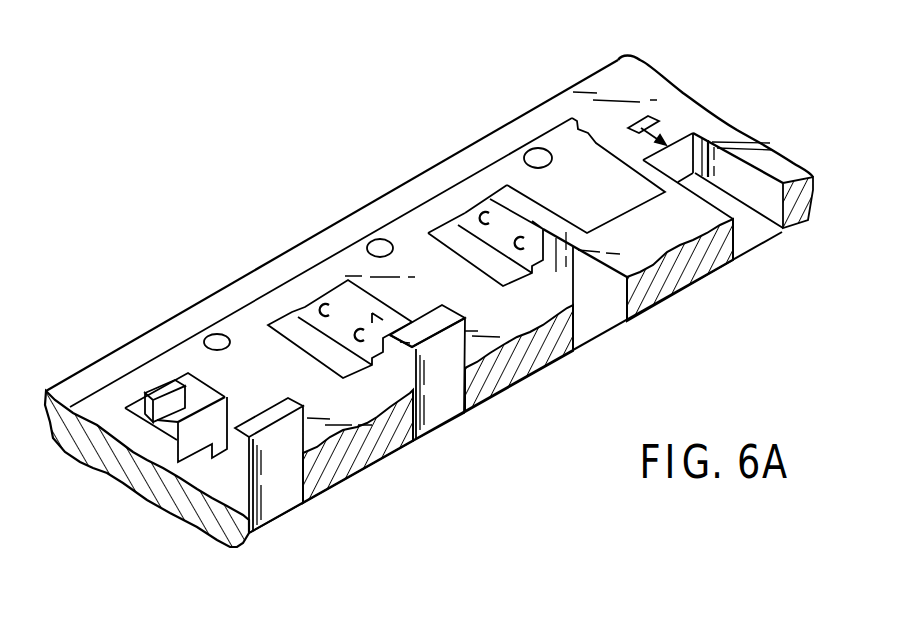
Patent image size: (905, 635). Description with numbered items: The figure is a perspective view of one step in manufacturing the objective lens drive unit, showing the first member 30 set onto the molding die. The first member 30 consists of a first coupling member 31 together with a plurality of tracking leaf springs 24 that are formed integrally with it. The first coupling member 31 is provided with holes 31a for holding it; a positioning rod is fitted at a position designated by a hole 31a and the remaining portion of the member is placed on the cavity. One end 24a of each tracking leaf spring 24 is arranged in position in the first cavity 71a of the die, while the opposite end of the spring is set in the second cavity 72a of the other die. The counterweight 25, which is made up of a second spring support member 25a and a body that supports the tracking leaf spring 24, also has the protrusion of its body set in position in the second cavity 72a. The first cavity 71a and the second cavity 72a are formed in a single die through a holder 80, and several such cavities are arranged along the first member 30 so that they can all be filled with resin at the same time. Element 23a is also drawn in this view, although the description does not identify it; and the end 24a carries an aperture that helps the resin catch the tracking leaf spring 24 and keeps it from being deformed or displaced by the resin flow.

The projection 23a is at (165, 386).
The tracking leaf spring 24 is at (506, 228).
The end of tracking leaf spring 24a is at (318, 309).
The counterweight 25 is at (427, 435).
The second spring support member 25a is at (197, 444).
The first member 30 is at (212, 323).
The first coupling member 31 is at (353, 265).
The hole 31a is at (379, 238).
The first cavity 71a is at (646, 132).
The second cavity 72a is at (753, 226).
The holder 80 is at (636, 131).